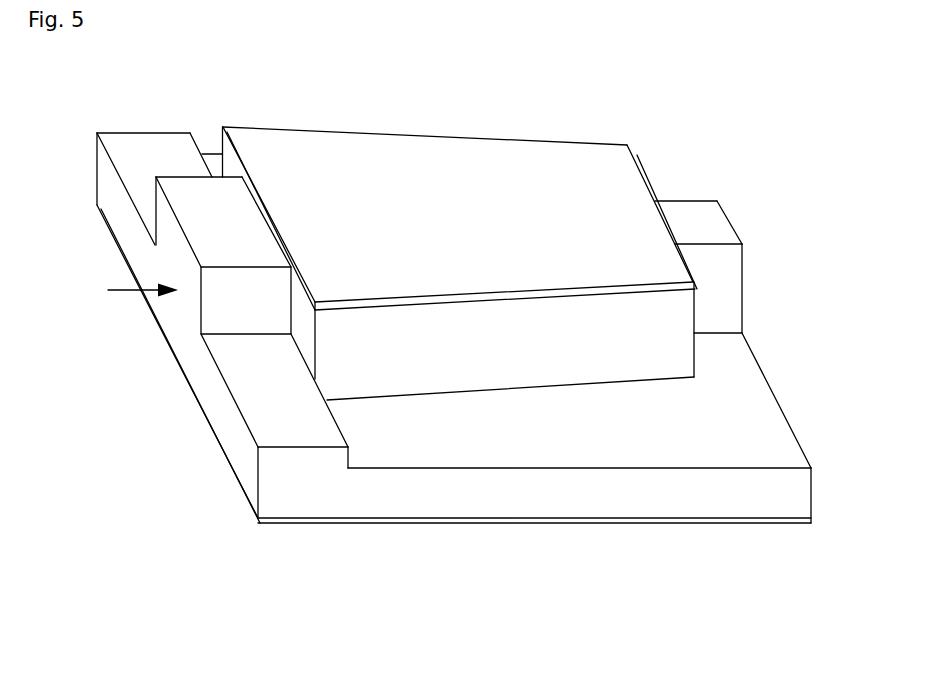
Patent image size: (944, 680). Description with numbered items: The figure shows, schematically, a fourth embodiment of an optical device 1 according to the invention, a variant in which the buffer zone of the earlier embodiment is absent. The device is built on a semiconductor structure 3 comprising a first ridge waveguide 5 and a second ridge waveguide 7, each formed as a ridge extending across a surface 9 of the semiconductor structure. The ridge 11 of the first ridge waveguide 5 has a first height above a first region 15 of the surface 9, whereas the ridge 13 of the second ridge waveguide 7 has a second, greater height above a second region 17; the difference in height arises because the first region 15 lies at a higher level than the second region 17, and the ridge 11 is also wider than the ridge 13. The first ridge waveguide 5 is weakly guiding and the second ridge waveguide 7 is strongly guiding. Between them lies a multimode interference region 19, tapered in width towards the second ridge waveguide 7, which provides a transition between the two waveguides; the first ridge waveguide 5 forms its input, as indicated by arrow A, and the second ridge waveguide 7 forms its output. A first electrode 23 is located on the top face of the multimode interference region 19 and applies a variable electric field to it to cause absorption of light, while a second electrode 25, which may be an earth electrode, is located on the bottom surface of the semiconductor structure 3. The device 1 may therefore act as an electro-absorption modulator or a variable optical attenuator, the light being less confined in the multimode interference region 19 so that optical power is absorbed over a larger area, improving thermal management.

The optical device 1 is at (472, 109).
The semiconductor structure 3 is at (232, 430).
The first ridge waveguide 5 is at (190, 233).
The second ridge waveguide 7 is at (717, 232).
The surface 9 is at (150, 140).
The ridge 11 is at (227, 311).
The ridge 13 is at (717, 298).
The first region 15 is at (242, 368).
The second region 17 is at (753, 423).
The multimode interference region 19 is at (548, 357).
The first electrode 23 is at (512, 168).
The second electrode 25 is at (742, 523).